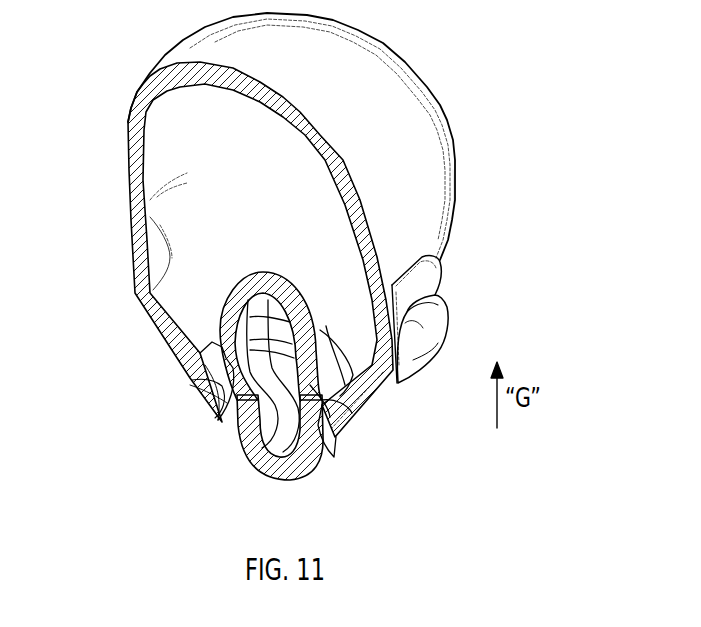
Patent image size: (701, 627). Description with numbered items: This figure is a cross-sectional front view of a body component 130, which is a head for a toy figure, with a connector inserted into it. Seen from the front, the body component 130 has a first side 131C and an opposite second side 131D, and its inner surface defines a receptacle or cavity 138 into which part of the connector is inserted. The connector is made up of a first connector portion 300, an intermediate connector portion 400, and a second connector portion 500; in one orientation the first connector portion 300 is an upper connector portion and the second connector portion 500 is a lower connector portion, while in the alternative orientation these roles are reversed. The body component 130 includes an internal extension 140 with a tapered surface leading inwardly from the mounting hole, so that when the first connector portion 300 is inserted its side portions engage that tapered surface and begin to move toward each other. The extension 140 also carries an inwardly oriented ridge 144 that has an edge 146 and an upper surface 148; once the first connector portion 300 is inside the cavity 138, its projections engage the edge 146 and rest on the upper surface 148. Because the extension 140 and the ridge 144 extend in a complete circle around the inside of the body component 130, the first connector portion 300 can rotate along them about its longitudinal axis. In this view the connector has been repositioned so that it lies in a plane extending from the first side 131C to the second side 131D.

The body component 130 is at (383, 77).
The first side 131C is at (127, 153).
The second side 131D is at (420, 218).
The cavity 138 is at (280, 199).
The first connector portion 300 is at (262, 282).
The second connector portion 500 is at (317, 463).
The intermediate connector portion 400 is at (240, 417).
The edge 146 is at (217, 370).
The ridge 144 is at (205, 387).
The upper surface 148 is at (343, 405).
The extension 140 is at (320, 420).